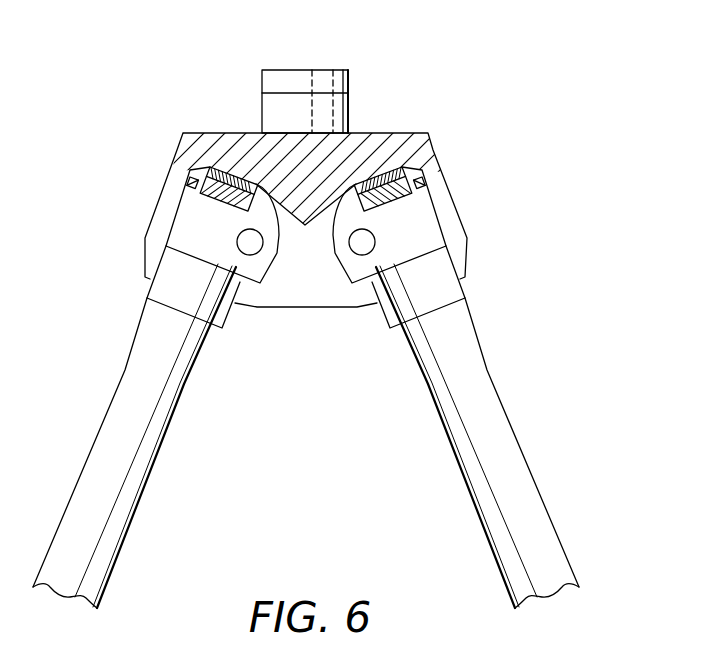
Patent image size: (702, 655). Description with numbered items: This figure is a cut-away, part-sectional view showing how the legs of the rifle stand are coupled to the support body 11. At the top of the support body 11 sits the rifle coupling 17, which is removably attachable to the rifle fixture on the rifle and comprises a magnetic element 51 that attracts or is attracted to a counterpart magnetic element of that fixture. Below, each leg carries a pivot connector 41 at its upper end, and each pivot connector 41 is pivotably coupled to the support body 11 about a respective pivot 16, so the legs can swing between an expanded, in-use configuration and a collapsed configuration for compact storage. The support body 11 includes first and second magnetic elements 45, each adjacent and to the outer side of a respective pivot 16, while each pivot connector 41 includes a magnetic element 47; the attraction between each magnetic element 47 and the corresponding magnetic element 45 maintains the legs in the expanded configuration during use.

The support body 11 is at (442, 141).
The pivot 16 is at (356, 247).
The rifle coupling 17 is at (360, 73).
The pivot connector 41 is at (188, 237).
The magnetic element 45 is at (205, 176).
The magnetic element 47 is at (196, 181).
The magnetic element 51 is at (302, 68).